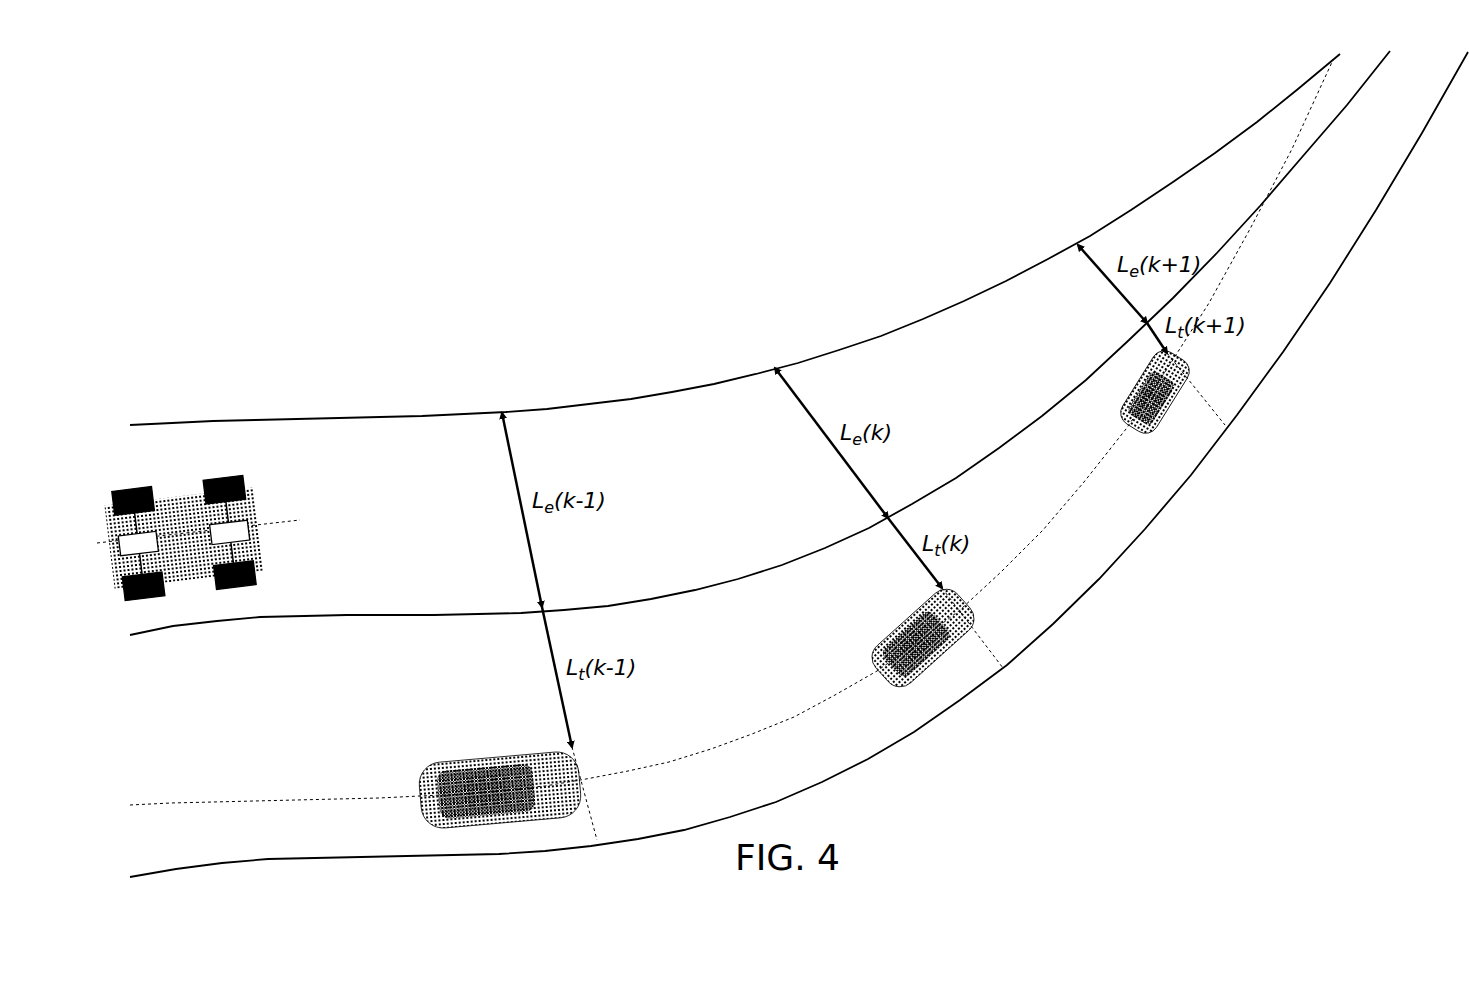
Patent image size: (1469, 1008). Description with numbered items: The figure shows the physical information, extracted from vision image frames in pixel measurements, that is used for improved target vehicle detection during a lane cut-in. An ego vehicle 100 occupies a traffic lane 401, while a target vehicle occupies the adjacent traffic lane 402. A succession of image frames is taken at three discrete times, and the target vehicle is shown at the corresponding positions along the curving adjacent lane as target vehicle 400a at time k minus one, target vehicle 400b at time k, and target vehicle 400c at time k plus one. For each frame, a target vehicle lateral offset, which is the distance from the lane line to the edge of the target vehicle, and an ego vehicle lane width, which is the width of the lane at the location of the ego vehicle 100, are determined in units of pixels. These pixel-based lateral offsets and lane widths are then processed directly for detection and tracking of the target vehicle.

The ego vehicle 100 is at (180, 495).
The traffic lane 401 is at (360, 537).
The traffic lane 402 is at (360, 730).
The target vehicle 400a is at (495, 757).
The target vehicle 400b is at (912, 626).
The target vehicle 400c is at (1133, 420).